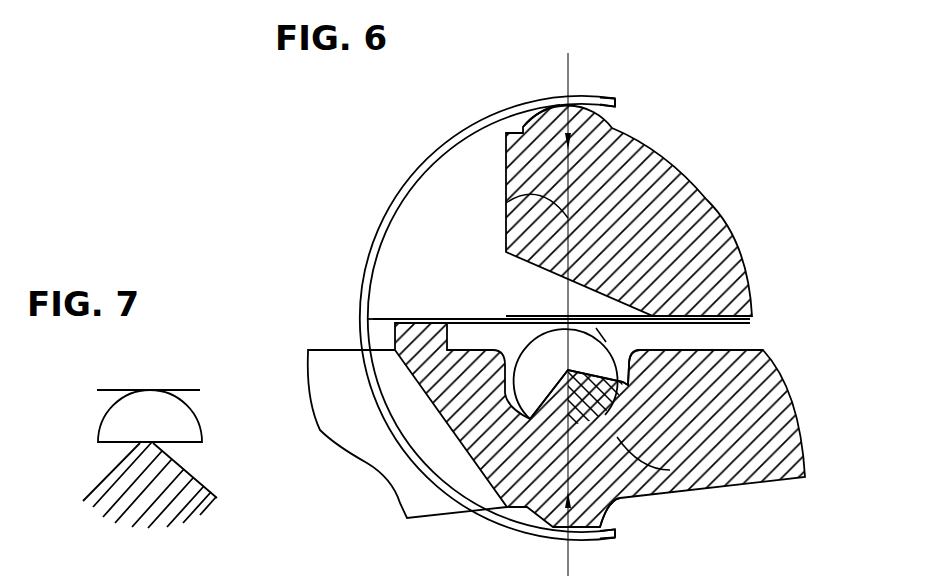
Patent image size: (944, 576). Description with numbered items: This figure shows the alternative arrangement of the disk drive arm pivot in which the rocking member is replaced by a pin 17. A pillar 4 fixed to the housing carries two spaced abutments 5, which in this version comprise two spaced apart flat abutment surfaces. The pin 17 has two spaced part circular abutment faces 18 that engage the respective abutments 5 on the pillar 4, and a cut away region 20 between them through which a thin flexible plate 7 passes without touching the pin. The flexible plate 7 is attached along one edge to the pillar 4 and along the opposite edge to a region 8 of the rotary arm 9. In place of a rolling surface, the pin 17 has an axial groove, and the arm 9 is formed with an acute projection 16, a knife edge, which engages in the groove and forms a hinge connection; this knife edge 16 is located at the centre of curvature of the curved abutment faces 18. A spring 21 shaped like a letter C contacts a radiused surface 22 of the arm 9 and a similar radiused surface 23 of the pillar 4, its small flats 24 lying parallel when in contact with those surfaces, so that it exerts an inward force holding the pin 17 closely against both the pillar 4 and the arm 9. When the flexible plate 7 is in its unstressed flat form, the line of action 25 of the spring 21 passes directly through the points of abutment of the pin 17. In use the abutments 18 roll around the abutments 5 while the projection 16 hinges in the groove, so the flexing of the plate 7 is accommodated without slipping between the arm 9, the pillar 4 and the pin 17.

The pillar 4 is at (720, 197).
The abutments 5 is at (540, 320).
The flexible plate 7 is at (472, 318).
The region of the rotary arm 8 is at (373, 318).
The rotary arm 9 is at (750, 378).
The acute projection 16 is at (617, 437).
The pin 17 is at (640, 373).
The abutments 18 is at (630, 440).
The cut away region 20 is at (608, 362).
The spring 21 is at (378, 240).
The radiused surface 22 is at (617, 507).
The radiused surface 23 is at (533, 115).
The flats 24 is at (588, 97).
The line of action 25 is at (510, 205).